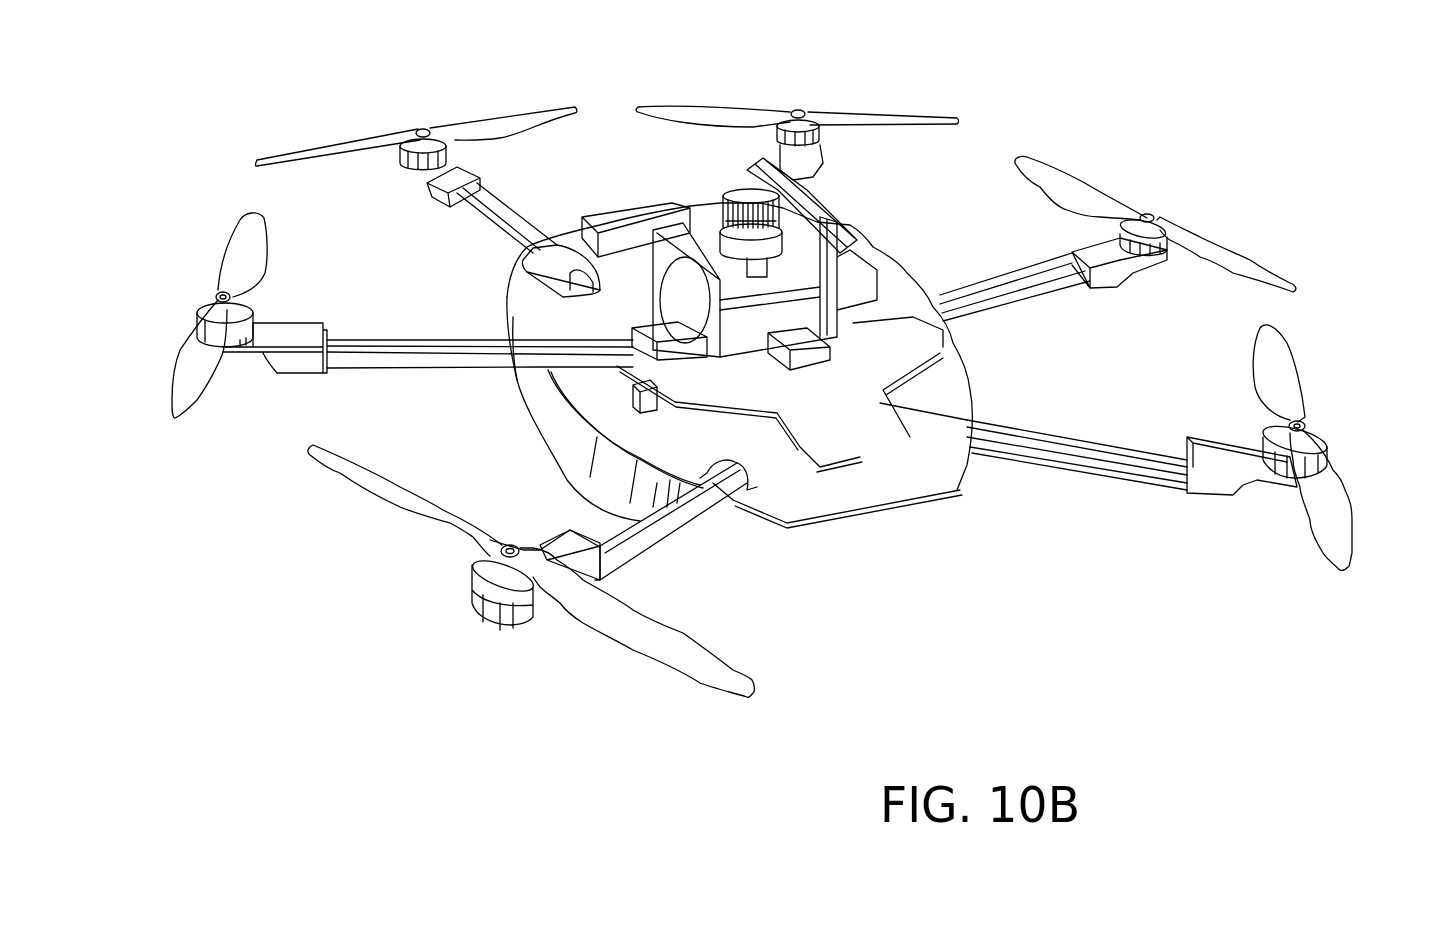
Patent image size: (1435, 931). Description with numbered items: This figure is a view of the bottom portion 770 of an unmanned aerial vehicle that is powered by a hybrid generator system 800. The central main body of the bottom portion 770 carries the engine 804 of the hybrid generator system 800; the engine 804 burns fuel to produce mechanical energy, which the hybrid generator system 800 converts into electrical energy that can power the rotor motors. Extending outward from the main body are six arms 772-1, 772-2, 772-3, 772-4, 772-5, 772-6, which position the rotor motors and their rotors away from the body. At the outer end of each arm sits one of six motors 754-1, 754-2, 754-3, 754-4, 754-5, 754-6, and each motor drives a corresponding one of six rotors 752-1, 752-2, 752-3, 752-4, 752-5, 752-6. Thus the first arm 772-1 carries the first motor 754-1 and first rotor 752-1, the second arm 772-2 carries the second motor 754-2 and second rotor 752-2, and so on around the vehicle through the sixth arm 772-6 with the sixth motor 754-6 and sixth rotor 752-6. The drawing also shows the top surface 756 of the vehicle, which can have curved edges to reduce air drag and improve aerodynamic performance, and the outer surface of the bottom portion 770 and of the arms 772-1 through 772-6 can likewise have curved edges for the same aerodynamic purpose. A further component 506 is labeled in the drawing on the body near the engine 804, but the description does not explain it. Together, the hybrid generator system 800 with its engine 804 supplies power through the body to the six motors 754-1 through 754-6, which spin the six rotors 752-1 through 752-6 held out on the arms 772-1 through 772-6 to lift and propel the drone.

The camera mount 506 is at (853, 260).
The top surface 756 is at (731, 376).
The bottom portion 770 is at (913, 600).
The hybrid generator system 800 is at (622, 130).
The engine 804 is at (743, 200).
The rotor 752-1 is at (1287, 390).
The rotor 752-2 is at (1223, 250).
The rotor 752-3 is at (720, 102).
The rotor 752-4 is at (337, 143).
The rotor 752-5 is at (240, 230).
The rotor 752-6 is at (647, 647).
The motor 754-1 is at (1267, 477).
The motor 754-2 is at (1163, 263).
The motor 754-3 is at (820, 127).
The motor 754-4 is at (403, 163).
The motor 754-5 is at (250, 320).
The motor 754-6 is at (477, 593).
The arm 772-1 is at (1077, 473).
The arm 772-2 is at (1030, 300).
The arm 772-3 is at (810, 183).
The arm 772-4 is at (497, 213).
The arm 772-5 is at (457, 377).
The arm 772-6 is at (653, 530).